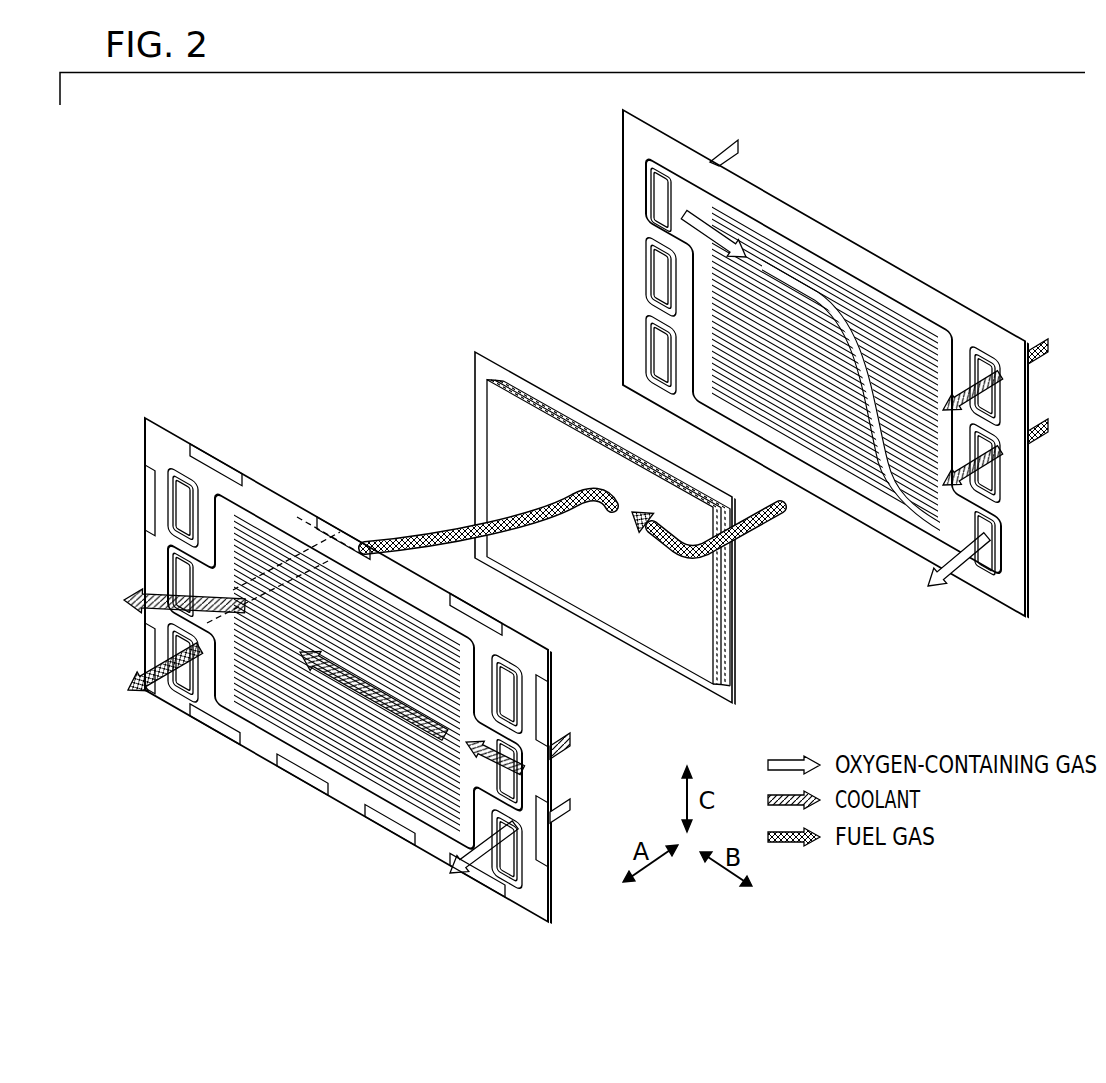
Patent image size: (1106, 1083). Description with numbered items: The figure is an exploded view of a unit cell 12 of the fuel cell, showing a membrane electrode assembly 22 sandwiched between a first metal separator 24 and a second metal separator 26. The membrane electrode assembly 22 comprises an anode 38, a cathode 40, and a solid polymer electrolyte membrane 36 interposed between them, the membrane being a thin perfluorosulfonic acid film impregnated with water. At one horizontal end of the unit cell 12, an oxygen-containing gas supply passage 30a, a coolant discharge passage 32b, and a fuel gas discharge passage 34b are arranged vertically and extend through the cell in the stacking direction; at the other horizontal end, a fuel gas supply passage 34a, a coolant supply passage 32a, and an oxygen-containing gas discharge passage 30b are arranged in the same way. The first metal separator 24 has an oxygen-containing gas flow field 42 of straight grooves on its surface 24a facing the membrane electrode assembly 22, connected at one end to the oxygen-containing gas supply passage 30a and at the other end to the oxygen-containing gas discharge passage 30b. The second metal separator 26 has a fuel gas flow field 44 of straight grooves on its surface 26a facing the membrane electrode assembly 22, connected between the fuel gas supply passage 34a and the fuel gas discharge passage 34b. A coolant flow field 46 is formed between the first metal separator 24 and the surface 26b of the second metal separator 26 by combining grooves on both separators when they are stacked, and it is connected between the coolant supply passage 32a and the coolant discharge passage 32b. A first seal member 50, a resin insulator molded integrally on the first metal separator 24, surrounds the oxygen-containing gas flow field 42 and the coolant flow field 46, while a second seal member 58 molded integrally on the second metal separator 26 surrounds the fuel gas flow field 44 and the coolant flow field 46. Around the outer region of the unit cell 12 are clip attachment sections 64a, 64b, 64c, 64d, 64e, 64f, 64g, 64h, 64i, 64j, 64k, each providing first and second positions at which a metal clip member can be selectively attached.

The unit cell 12 is at (283, 236).
The membrane electrode assembly 22 is at (583, 518).
The first metal separator 24 is at (892, 266).
The surface of first metal separator 24a is at (921, 535).
The second metal separator 26 is at (146, 419).
The surface of second metal separator 26a is at (427, 838).
The surface of second metal separator 26b is at (348, 790).
The oxygen-containing gas supply passage 30a is at (662, 198).
The oxygen-containing gas discharge passage 30b is at (984, 540).
The coolant supply passage 32a is at (984, 480).
The coolant discharge passage 32b is at (663, 258).
The fuel gas supply passage 34a is at (984, 414).
The fuel gas discharge passage 34b is at (663, 340).
The solid polymer electrolyte membrane 36 is at (698, 683).
The anode 38 is at (617, 595).
The cathode 40 is at (560, 440).
The oxygen-containing gas flow field 42 is at (834, 462).
The fuel gas flow field 44 is at (302, 540).
The coolant flow field 46 is at (270, 710).
The first seal member 50 is at (639, 136).
The second seal member 58 is at (164, 443).
The clip attachment section 64a is at (214, 455).
The clip attachment section 64b is at (347, 528).
The clip attachment section 64c is at (472, 596).
The clip attachment section 64d is at (551, 693).
The clip attachment section 64e is at (554, 829).
The clip attachment section 64f is at (471, 893).
The clip attachment section 64g is at (379, 831).
The clip attachment section 64h is at (301, 787).
The clip attachment section 64i is at (202, 731).
The clip attachment section 64j is at (141, 649).
The clip attachment section 64k is at (140, 473).